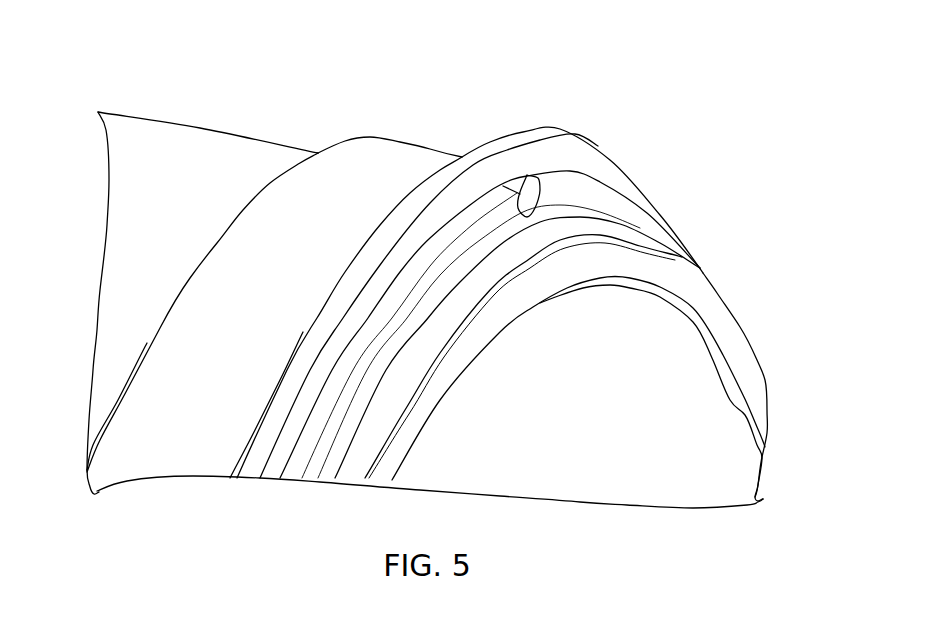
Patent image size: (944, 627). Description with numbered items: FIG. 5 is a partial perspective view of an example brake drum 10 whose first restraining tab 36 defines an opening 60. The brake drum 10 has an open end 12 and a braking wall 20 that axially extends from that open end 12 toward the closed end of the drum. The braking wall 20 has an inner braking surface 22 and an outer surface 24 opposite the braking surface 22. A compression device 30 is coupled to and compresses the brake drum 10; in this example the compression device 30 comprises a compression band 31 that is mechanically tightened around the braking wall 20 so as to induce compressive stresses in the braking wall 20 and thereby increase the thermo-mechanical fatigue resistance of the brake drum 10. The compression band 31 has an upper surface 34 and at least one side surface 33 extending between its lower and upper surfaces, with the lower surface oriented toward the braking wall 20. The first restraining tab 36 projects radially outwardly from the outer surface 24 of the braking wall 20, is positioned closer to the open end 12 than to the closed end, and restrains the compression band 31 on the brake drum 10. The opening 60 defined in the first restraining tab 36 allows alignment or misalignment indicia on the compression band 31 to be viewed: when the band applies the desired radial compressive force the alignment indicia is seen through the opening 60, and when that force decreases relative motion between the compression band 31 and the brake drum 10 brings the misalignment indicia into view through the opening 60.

The brake drum 10 is at (532, 71).
The open end 12 is at (707, 238).
The braking wall 20 is at (707, 302).
The braking surface 22 is at (648, 291).
The outer surface 24 is at (745, 330).
The compression device 30 is at (398, 157).
The compression band 31 is at (100, 479).
The side surface 33 is at (610, 165).
The upper surface 34 is at (170, 331).
The first restraining tab 36 is at (647, 215).
The opening 60 is at (523, 170).